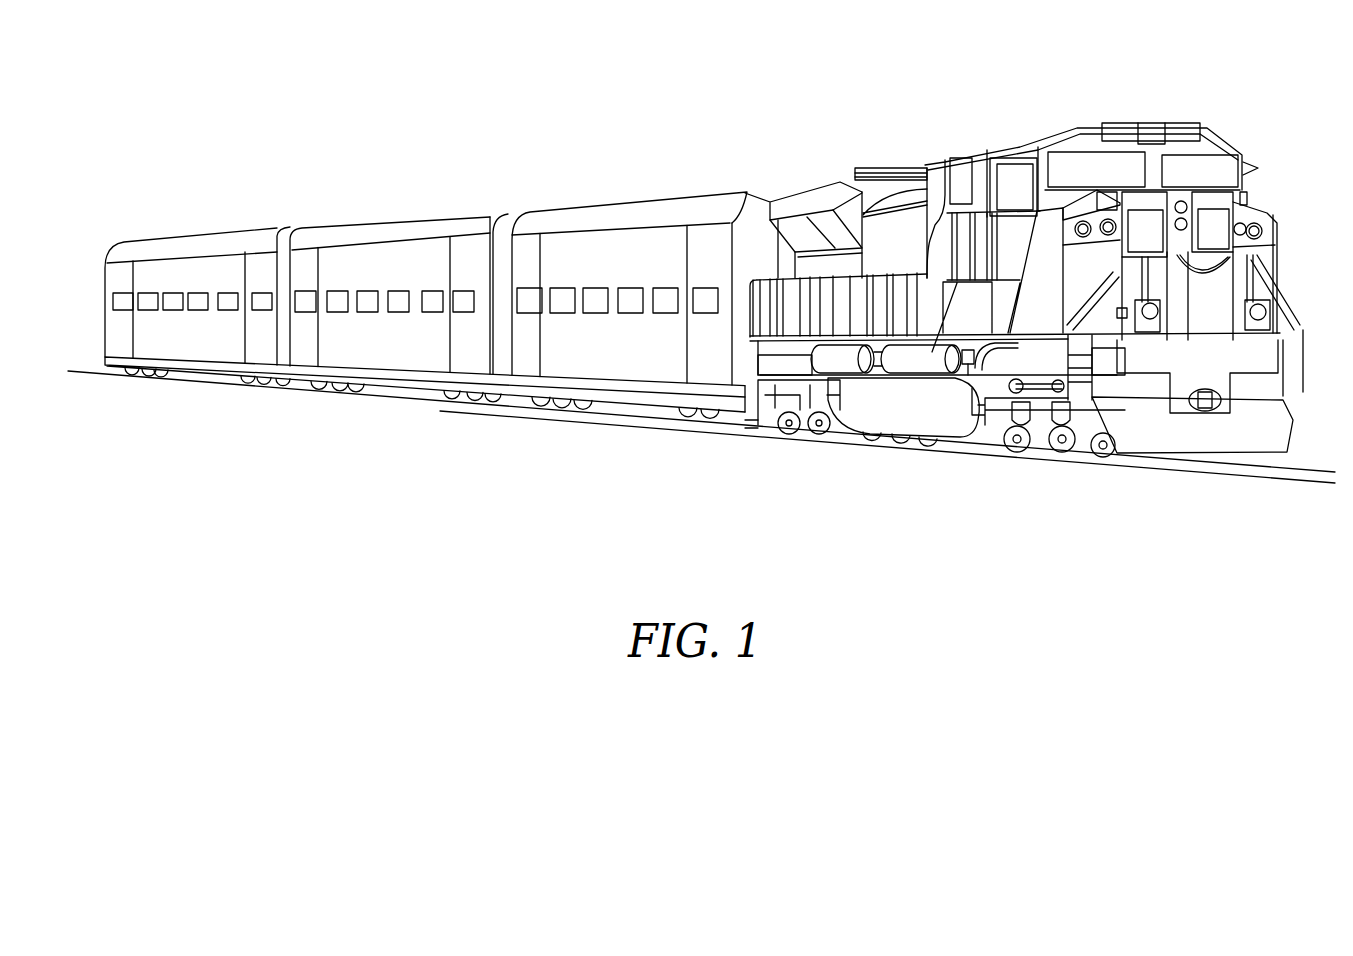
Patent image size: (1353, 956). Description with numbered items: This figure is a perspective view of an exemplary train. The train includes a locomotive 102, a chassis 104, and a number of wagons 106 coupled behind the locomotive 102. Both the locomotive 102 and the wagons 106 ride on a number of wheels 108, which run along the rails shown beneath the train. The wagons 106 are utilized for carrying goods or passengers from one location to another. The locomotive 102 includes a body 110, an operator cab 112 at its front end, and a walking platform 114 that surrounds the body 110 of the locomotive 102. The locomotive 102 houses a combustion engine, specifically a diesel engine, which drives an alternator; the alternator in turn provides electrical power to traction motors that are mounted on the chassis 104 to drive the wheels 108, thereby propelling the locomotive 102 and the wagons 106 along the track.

The locomotive 102 is at (1057, 130).
The chassis 104 is at (803, 440).
The wagons 106 is at (750, 178).
The wheels 108 is at (136, 382).
The body 110 is at (933, 192).
The operator cab 112 is at (1220, 135).
The walking platform 114 is at (963, 280).